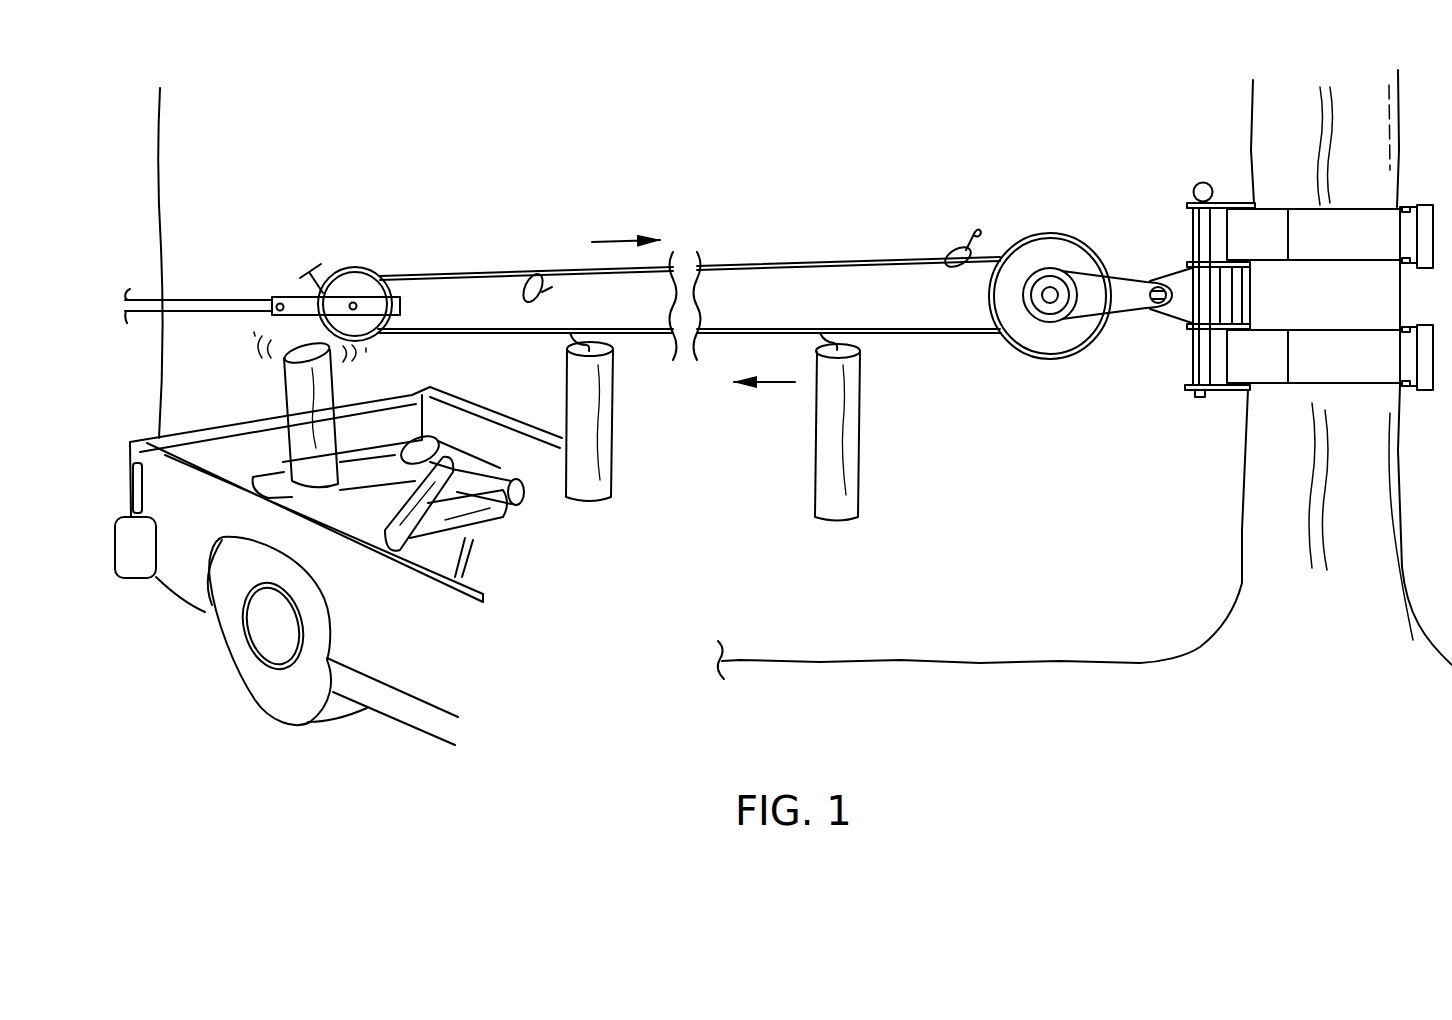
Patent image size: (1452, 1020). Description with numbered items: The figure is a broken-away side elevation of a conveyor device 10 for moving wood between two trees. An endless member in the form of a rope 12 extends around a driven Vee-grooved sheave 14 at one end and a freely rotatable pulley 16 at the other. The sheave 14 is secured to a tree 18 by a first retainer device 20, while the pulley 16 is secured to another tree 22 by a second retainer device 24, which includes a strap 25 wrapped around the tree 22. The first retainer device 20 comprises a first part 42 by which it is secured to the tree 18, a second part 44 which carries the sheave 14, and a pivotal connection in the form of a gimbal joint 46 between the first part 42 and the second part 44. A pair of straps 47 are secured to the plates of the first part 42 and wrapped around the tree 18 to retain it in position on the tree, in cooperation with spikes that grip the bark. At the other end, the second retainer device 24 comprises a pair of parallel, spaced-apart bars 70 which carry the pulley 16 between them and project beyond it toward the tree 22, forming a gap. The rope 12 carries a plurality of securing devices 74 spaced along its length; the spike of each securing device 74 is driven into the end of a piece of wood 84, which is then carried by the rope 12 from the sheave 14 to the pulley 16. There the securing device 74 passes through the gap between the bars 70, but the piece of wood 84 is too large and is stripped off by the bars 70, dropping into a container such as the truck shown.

The conveyor device 10 is at (673, 203).
The rope 12 is at (824, 261).
The driven Vee-grooved sheave 14 is at (1030, 328).
The freely rotatable pulley 16 is at (362, 325).
The tree 18 is at (1270, 529).
The first retainer device 20 is at (1151, 211).
The tree 22 is at (147, 132).
The second retainer device 24 is at (272, 260).
The strap 25 is at (207, 298).
The first part 42 is at (1227, 170).
The second part 44 is at (1106, 345).
The gimbal joint 46 is at (1155, 393).
The straps 47 is at (1346, 245).
The bars 70 is at (400, 307).
The securing devices 74 is at (947, 260).
The piece of wood 84 is at (855, 466).